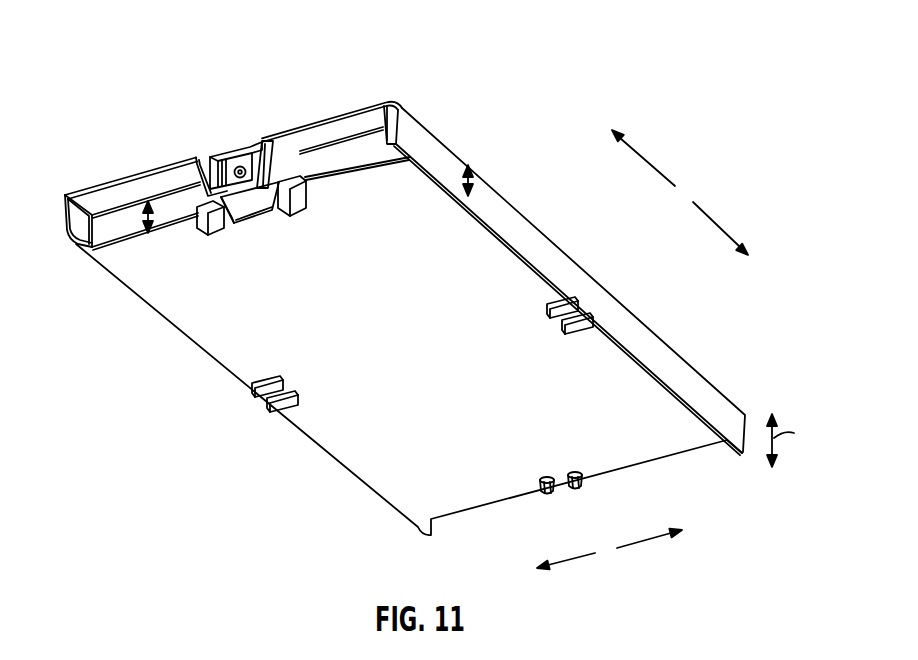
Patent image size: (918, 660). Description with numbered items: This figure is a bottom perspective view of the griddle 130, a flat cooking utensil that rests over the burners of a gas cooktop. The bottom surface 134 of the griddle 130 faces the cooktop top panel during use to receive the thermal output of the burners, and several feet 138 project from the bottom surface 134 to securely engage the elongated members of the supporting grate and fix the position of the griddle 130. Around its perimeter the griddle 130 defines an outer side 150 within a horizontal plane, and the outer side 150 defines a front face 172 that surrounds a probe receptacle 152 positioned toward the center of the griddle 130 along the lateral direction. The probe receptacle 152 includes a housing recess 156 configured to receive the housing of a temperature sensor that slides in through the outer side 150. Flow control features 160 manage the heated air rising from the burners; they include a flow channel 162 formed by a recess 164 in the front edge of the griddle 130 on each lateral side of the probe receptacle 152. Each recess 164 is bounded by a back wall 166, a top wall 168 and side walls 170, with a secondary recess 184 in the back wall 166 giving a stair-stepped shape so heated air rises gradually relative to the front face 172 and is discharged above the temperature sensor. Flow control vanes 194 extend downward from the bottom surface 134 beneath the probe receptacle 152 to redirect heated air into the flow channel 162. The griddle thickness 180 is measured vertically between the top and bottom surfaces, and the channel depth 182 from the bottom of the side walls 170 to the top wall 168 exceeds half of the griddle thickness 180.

The griddle 130 is at (122, 90).
The bottom surface 134 is at (605, 380).
The feet 138 is at (565, 302).
The outer side 150 is at (516, 199).
The probe receptacle 152 is at (231, 139).
The housing recess 156 is at (264, 145).
The flow control features 160 is at (380, 203).
The flow channel 162 is at (113, 208).
The recess 164 is at (164, 185).
The back wall 166 is at (375, 153).
The top wall 168 is at (348, 117).
The side walls 170 is at (404, 120).
The front face 172 is at (200, 152).
The griddle thickness 180 is at (462, 182).
The channel depth 182 is at (142, 216).
The secondary recess 184 is at (303, 203).
The flow control vanes 194 is at (250, 216).